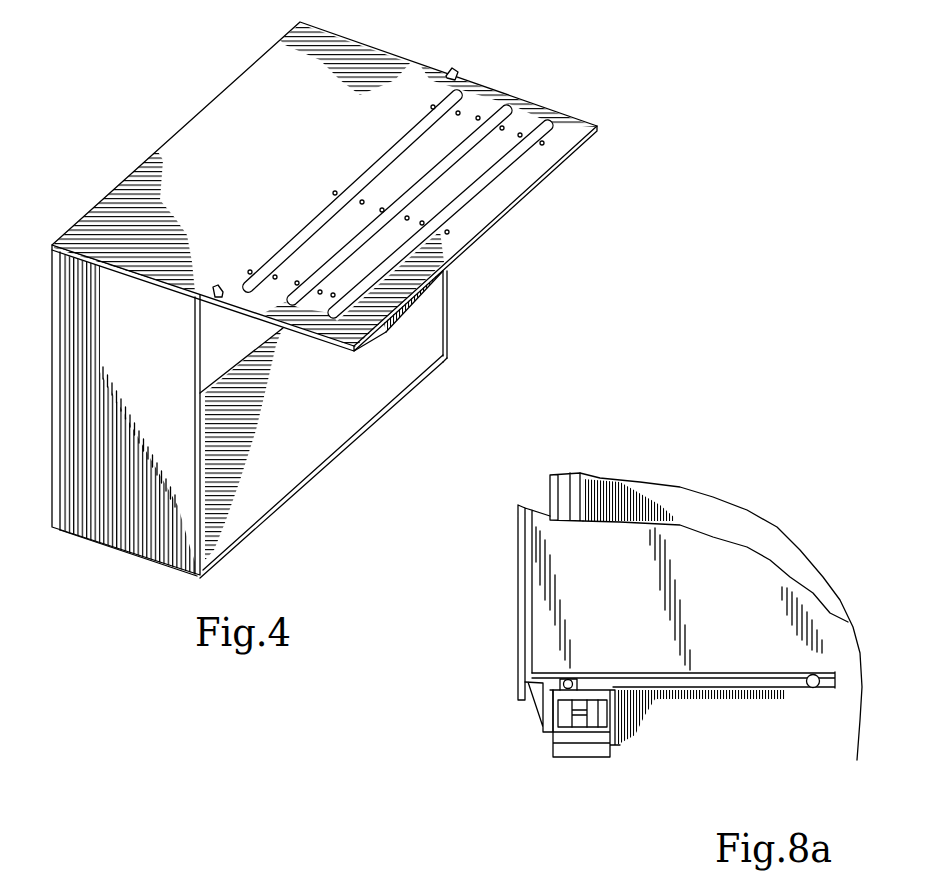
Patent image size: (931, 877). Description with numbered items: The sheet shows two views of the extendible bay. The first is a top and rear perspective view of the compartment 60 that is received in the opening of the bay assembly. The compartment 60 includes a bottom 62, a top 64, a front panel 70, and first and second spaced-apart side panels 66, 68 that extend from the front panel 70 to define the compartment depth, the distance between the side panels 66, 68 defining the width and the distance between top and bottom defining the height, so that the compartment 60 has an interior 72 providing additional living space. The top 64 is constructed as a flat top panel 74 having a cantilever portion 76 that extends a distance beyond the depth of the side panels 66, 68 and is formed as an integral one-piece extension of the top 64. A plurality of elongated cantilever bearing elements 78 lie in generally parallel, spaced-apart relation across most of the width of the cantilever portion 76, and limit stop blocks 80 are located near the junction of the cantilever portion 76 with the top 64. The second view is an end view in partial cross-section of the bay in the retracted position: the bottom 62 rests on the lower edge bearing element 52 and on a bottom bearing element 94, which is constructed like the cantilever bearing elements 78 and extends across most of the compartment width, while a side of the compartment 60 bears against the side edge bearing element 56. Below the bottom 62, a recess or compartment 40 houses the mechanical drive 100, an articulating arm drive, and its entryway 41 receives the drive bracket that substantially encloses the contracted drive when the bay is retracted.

In FIG. 4, the compartment 60 is at (373, 314).
In FIG. 4, the bottom 62 is at (303, 363).
In FIG. 8A, the bottom 62 is at (670, 677).
In FIG. 4, the top 64 is at (158, 182).
In FIG. 4, the first side panel 66 is at (448, 305).
In FIG. 4, the second side panel 68 is at (163, 535).
In FIG. 4, the front panel 70 is at (247, 349).
In FIG. 8A, the front panel 70 is at (527, 593).
In FIG. 4, the interior 72 is at (281, 478).
In FIG. 4, the flat top panel 74 is at (395, 68).
In FIG. 4, the cantilever portion 76 is at (565, 140).
In FIG. 4, the cantilever bearing elements 78 is at (355, 183).
In FIG. 4, the limit stop blocks 80 is at (457, 72).
In FIG. 8A, the side edge bearing element 56 is at (583, 488).
In FIG. 8A, the lower edge bearing element 52 is at (570, 683).
In FIG. 8A, the bottom bearing element 94 is at (813, 688).
In FIG. 8A, the entryway 41 is at (533, 745).
In FIG. 8A, the compartment (recess) 40 is at (589, 756).
In FIG. 8A, the mechanical drive 100 is at (595, 734).